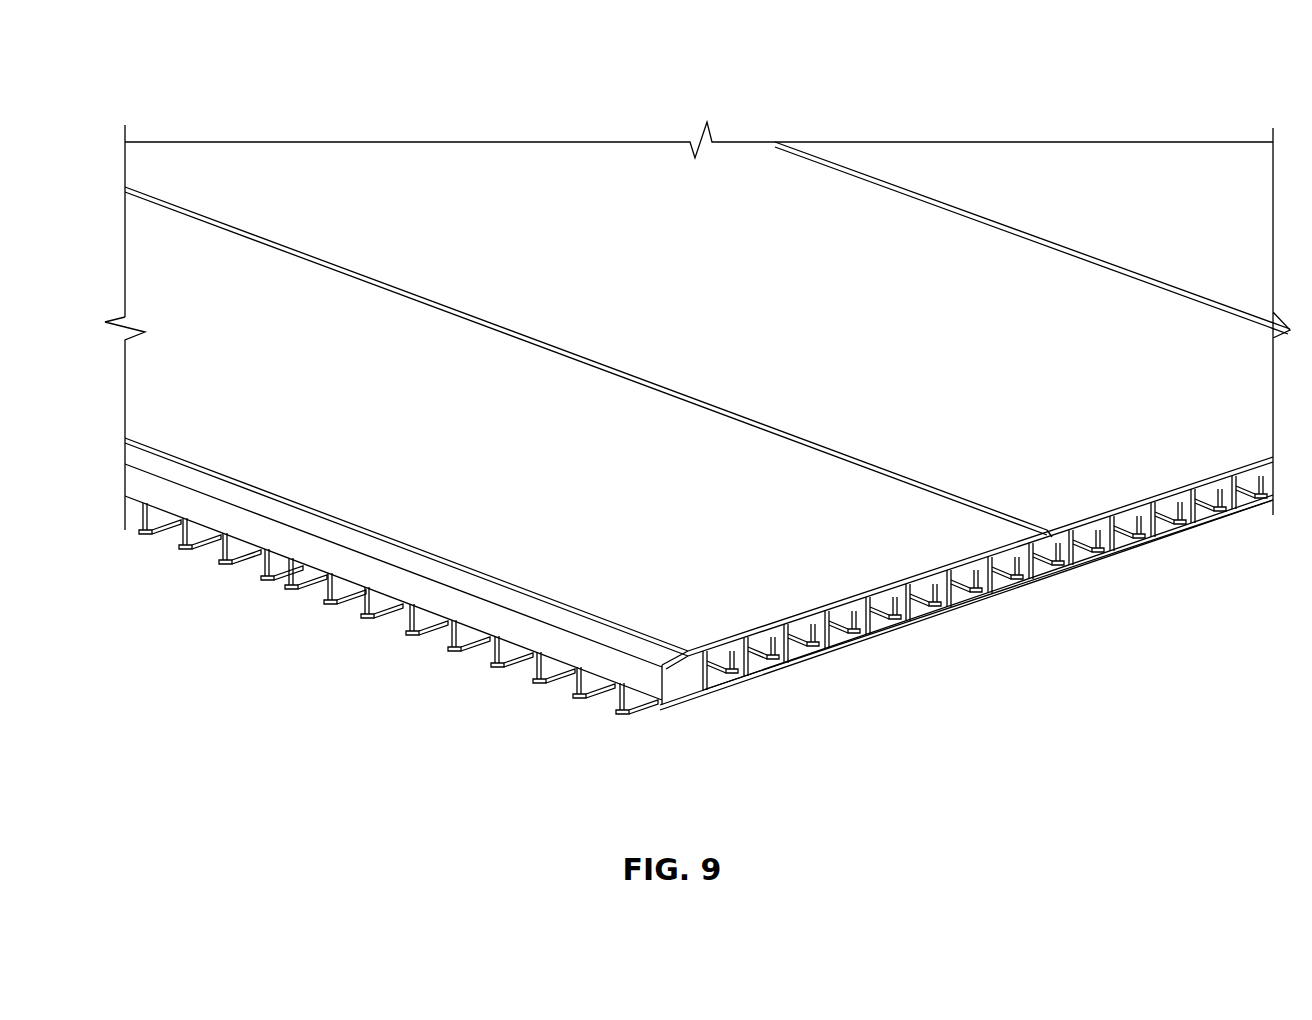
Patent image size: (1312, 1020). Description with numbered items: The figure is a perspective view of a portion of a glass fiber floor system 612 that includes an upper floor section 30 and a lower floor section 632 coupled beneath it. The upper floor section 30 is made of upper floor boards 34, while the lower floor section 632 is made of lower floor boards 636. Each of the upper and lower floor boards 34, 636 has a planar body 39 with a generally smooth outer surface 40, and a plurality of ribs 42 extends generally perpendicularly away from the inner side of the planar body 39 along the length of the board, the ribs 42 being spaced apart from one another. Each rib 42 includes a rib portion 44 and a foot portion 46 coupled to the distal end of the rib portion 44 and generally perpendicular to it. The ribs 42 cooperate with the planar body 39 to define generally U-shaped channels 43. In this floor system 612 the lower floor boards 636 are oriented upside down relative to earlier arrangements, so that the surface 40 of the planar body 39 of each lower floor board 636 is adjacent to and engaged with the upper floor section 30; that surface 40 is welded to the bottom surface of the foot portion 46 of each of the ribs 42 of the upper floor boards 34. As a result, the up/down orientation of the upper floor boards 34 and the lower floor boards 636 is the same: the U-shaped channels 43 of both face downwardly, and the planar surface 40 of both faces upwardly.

The floor system 612 is at (203, 82).
The upper floor section 30 is at (1155, 200).
The upper floor boards 34 is at (830, 185).
The outer surface 40 is at (1191, 249).
The planar body 39 is at (130, 505).
The lower floor boards 636 is at (183, 537).
The U-shaped channels 43 is at (573, 687).
The lower floor section 632 is at (613, 704).
The ribs 42 is at (952, 585).
The rib portion 44 is at (775, 663).
The foot portion 46 is at (837, 645).